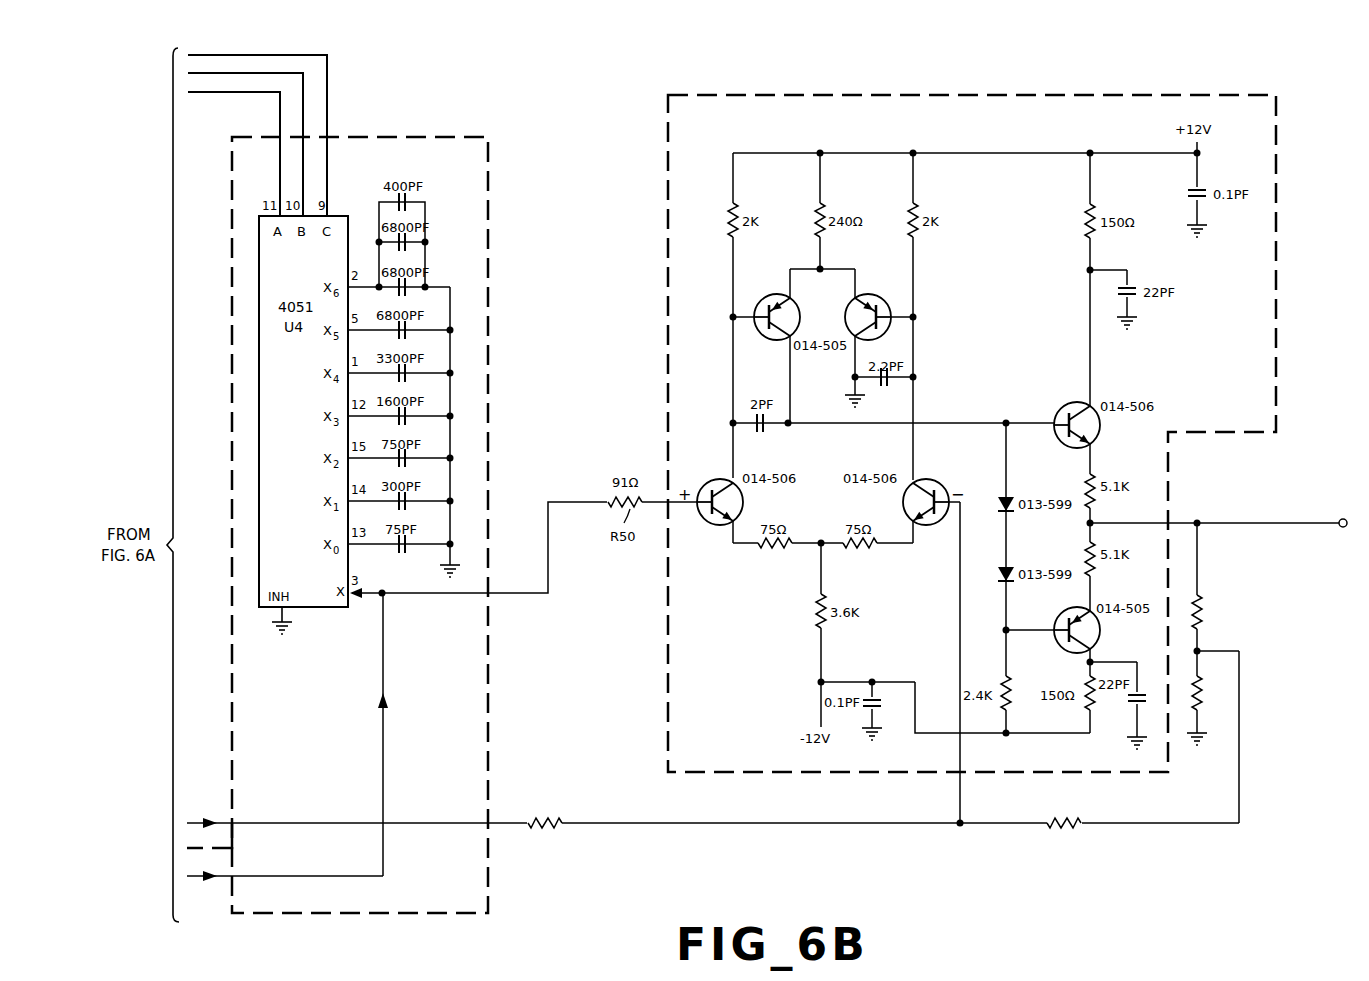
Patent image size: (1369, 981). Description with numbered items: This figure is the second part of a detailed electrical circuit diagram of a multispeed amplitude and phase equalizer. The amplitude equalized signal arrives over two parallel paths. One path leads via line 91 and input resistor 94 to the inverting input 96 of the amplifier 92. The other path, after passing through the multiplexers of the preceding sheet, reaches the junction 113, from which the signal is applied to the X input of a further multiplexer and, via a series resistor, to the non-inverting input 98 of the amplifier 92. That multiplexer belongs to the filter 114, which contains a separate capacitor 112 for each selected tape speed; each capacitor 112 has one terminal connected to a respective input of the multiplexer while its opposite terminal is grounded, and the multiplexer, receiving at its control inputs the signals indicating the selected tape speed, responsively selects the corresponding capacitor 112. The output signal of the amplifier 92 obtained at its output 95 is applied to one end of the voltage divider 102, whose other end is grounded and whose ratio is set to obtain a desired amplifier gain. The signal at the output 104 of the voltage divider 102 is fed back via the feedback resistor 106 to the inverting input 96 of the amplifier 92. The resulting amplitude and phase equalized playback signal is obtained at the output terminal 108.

The line 91 is at (262, 823).
The amplifier 92 is at (1233, 396).
The input resistor 94 is at (552, 827).
The output 95 is at (1096, 522).
The inverting input 96 is at (963, 822).
The non-inverting input 98 is at (688, 503).
The voltage divider 102 is at (1203, 597).
The output of voltage divider 104 is at (1201, 651).
The feedback resistor 106 is at (1078, 827).
The output terminal 108 is at (1343, 519).
The capacitor 112 is at (405, 553).
The junction 113 is at (385, 597).
The filter 114 is at (482, 160).